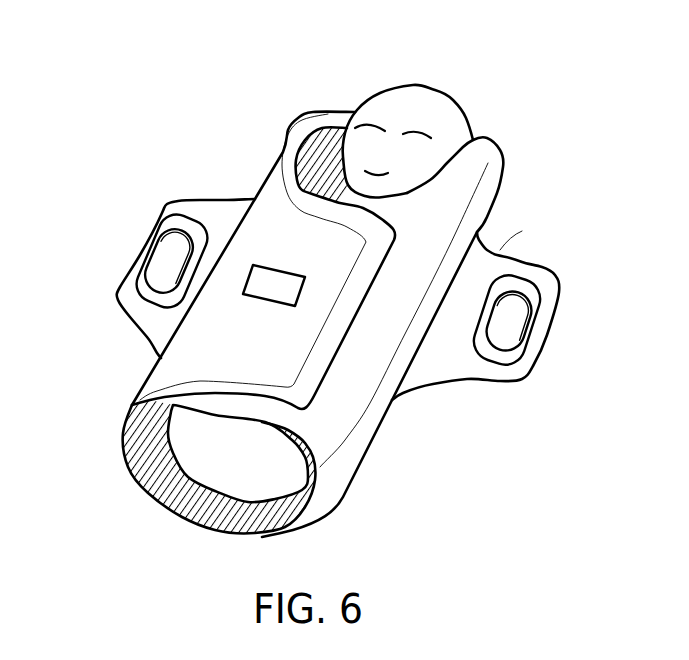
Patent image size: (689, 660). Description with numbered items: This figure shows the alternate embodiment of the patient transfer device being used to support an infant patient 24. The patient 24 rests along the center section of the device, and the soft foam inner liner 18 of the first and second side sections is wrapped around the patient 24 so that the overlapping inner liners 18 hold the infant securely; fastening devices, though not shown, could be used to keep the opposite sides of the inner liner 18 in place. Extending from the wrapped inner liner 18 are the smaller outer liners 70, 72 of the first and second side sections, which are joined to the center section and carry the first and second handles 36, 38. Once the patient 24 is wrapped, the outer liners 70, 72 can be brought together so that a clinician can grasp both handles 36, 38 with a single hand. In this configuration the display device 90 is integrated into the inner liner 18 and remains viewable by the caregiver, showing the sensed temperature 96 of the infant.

The inner liner 18 is at (278, 210).
The patient 24 is at (422, 107).
The first handle 36 is at (140, 290).
The second handle 38 is at (540, 277).
The outer liner 70 is at (188, 200).
The outer liner 72 is at (503, 247).
The display device 90 is at (250, 300).
The sensed temperature 96 is at (277, 268).